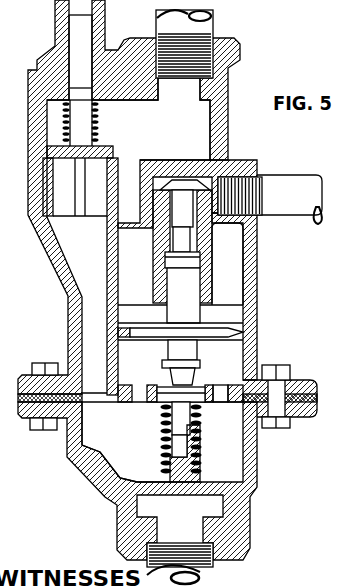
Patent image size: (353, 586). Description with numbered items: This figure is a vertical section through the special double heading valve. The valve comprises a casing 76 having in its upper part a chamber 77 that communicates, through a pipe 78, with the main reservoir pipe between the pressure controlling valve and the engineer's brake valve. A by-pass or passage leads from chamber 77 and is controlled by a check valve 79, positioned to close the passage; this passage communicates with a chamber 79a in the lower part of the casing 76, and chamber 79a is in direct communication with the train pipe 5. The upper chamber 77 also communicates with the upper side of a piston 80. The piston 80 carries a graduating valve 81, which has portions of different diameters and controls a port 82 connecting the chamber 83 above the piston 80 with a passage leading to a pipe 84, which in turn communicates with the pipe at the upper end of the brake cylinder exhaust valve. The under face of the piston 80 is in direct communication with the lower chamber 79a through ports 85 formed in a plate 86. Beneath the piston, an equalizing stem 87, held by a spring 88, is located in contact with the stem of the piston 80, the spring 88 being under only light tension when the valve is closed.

The train pipe 5 is at (208, 568).
The casing 76 is at (48, 252).
The chamber 77 is at (128, 119).
The pipe 78 is at (209, 25).
The check valve 79 is at (50, 150).
The chamber 79a is at (126, 442).
The piston 80 is at (242, 331).
The graduating valve 81 is at (183, 295).
The port 82 is at (203, 271).
The chamber 83 is at (227, 264).
The pipe 84 is at (294, 184).
The ports 85 is at (225, 390).
The plate 86 is at (123, 387).
The equalizing stem 87 is at (177, 422).
The spring 88 is at (199, 457).